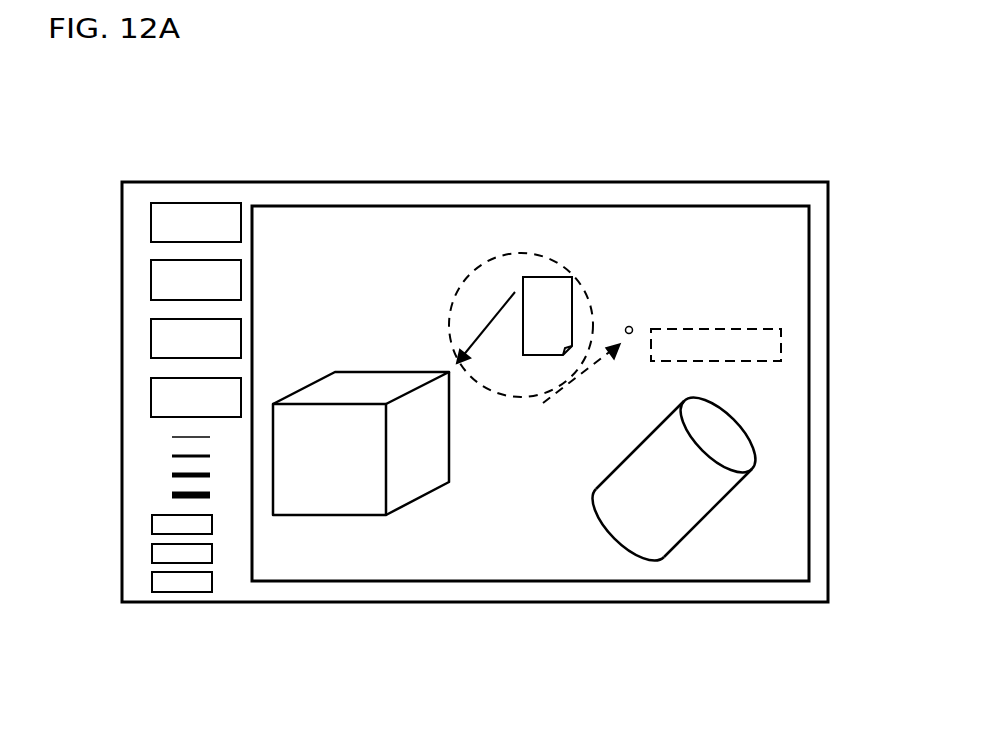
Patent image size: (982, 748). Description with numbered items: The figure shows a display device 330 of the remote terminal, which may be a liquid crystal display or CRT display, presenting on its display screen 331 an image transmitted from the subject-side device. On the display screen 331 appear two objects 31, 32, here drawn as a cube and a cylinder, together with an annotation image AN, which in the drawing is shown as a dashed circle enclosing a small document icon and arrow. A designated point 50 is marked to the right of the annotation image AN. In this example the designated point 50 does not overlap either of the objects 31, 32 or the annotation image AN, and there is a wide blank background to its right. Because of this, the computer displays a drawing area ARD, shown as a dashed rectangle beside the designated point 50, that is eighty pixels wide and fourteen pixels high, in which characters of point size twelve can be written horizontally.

The display device 330 is at (208, 603).
The display screen 331 is at (502, 562).
The object 31 is at (368, 387).
The object 32 is at (668, 533).
The designated point 50 is at (594, 330).
The annotation image AN is at (380, 335).
The drawing area ARD is at (670, 320).